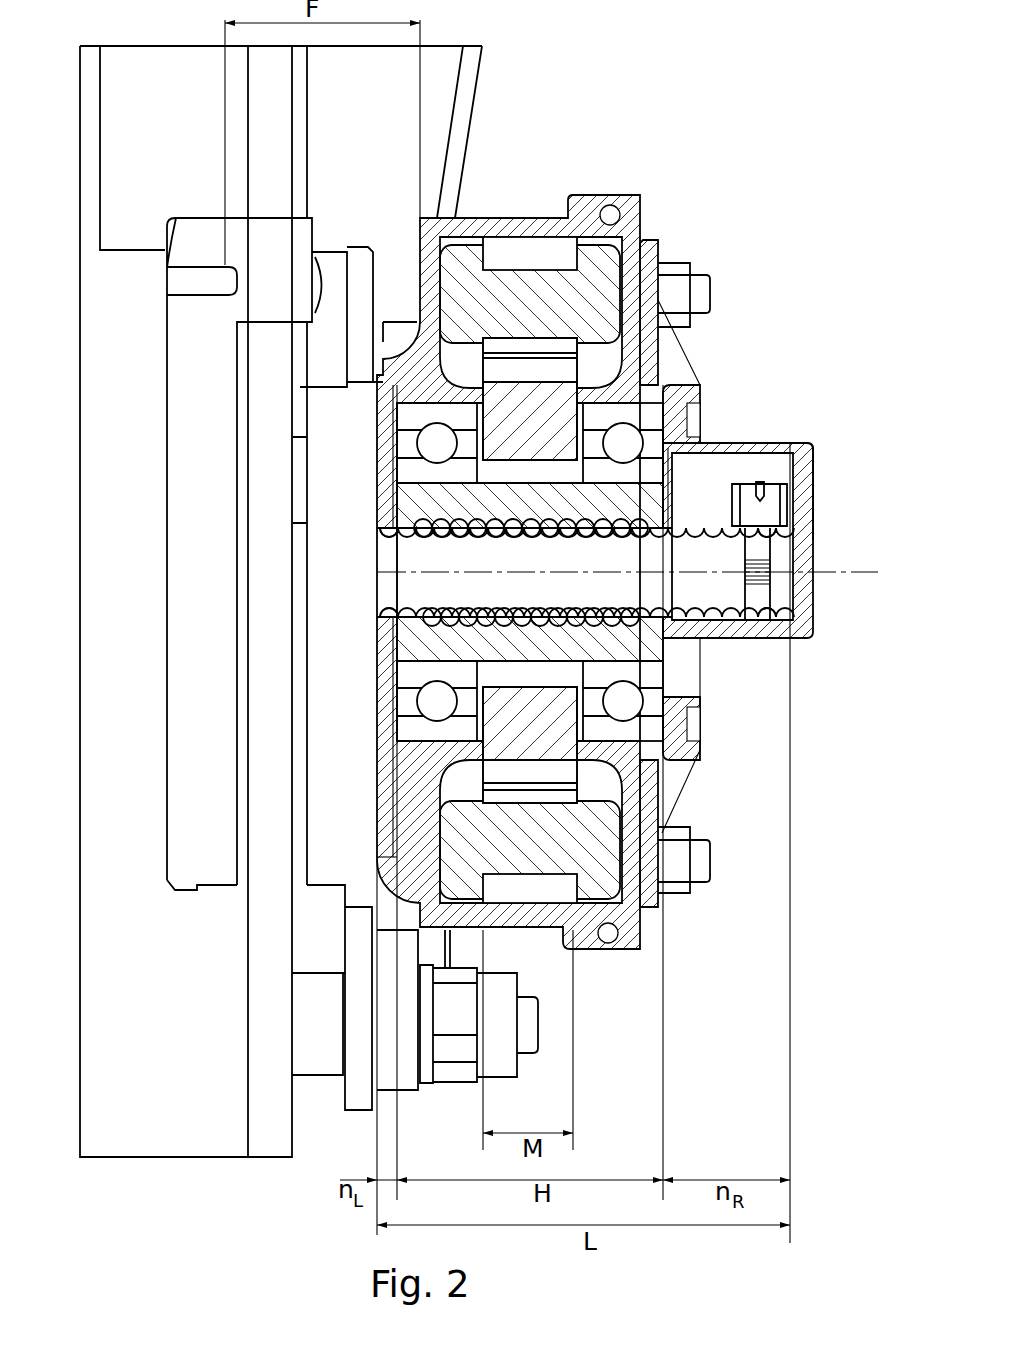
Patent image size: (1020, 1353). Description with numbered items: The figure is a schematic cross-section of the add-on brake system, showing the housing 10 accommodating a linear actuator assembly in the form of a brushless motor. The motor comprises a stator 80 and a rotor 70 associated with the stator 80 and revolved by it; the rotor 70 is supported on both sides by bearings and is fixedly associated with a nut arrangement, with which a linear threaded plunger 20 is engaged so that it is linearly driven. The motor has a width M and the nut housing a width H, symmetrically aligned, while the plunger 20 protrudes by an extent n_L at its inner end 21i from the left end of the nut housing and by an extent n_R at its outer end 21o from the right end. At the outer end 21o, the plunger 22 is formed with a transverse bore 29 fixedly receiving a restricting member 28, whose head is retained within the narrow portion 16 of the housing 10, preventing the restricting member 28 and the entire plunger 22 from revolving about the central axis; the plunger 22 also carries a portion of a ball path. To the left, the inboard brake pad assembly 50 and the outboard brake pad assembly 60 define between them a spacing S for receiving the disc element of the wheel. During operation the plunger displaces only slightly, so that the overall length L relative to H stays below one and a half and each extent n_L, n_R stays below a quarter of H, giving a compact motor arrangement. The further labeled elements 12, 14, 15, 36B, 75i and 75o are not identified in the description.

The housing 10 is at (481, 529).
The flange 12 is at (641, 212).
The housing 14 is at (488, 217).
The screw 15 is at (786, 497).
The narrow portion 16 is at (803, 536).
The linear threaded plunger 20 is at (667, 513).
The inner end 21i is at (376, 560).
The outer end 21o is at (770, 590).
The plunger 22 is at (728, 605).
The restricting member 28 is at (792, 442).
The transverse bore 29 is at (757, 600).
The bearing block 36B is at (185, 1087).
The inboard brake pad assembly 50 is at (166, 803).
The outboard brake pad assembly 60 is at (322, 890).
The rotor 70 is at (553, 420).
The inner seal 75i is at (392, 508).
The outer seal 75o is at (690, 522).
The stator 80 is at (627, 265).
The spacing S is at (265, 670).